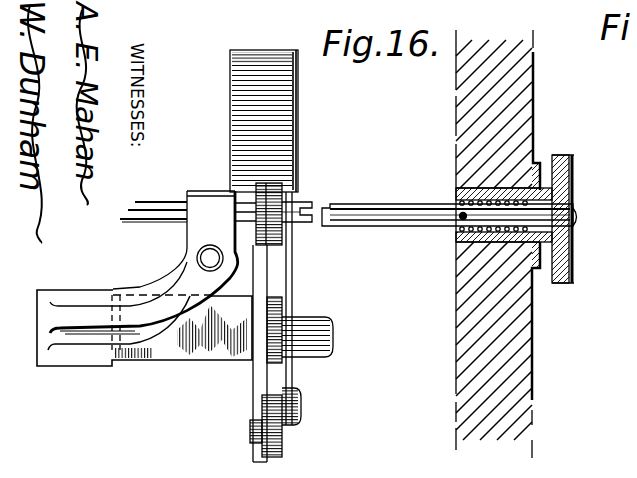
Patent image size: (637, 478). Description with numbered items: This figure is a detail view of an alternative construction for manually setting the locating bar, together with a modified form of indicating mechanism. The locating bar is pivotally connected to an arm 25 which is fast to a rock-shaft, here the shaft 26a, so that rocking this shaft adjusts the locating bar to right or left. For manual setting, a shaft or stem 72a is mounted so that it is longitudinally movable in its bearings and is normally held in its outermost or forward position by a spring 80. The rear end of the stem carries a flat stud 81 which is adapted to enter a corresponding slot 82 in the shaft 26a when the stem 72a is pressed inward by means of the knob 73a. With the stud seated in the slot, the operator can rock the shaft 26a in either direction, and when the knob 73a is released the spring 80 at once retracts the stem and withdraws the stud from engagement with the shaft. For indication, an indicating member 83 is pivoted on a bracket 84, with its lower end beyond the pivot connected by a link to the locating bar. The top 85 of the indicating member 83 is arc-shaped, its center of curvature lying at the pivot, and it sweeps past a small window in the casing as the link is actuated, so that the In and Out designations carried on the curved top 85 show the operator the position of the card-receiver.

The arm 25 is at (258, 275).
The shaft 26a is at (144, 203).
The shaft or stem 72a is at (388, 222).
The knob 73a is at (574, 185).
The spring 80 is at (455, 200).
The flat stud 81 is at (328, 204).
The slot 82 is at (310, 205).
The indicating member 83 is at (295, 248).
The bracket 84 is at (218, 352).
The top of indicating member 85 is at (258, 50).